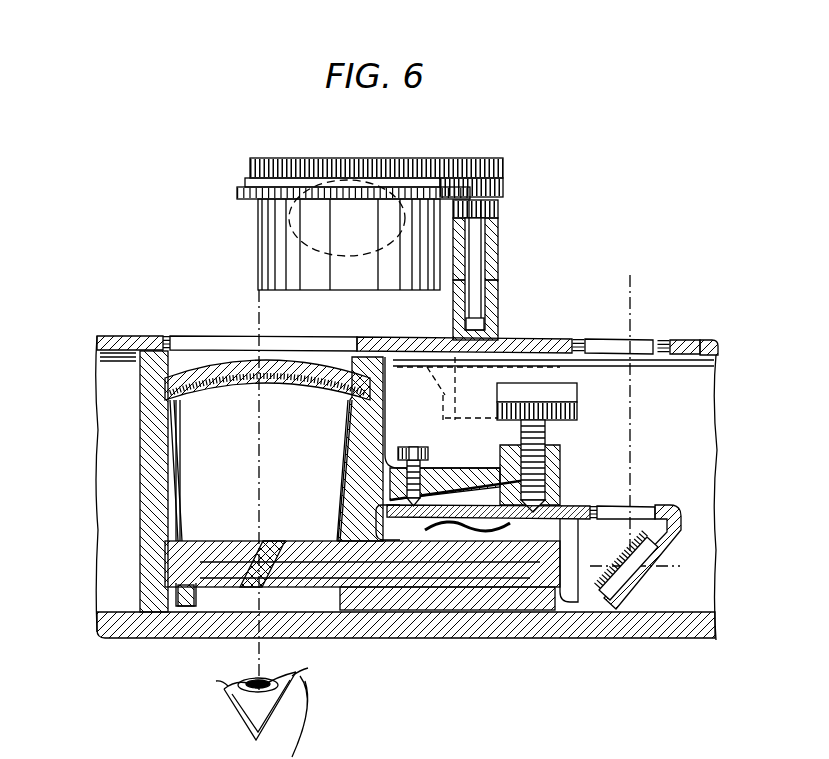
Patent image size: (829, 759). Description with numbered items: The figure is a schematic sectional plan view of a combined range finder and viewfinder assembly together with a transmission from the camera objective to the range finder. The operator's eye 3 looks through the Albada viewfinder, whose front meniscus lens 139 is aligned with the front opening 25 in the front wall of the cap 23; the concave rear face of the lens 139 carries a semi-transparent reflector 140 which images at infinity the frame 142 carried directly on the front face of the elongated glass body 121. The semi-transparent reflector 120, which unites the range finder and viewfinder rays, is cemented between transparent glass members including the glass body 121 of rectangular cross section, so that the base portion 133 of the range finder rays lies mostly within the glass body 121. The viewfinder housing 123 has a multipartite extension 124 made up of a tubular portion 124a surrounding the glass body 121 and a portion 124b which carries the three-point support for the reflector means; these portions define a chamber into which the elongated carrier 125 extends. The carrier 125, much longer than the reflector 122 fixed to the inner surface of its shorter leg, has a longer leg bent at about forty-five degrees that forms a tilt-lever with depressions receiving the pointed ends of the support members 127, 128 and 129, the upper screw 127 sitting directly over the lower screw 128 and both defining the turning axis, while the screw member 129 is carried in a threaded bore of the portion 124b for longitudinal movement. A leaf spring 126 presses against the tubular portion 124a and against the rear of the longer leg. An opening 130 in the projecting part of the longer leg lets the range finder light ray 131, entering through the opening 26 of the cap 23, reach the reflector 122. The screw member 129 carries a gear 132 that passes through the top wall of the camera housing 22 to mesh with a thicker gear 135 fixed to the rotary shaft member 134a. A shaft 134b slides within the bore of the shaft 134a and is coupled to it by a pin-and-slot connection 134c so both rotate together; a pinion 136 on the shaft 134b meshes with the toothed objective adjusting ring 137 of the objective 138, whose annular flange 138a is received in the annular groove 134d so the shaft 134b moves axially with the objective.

The eye 3 is at (245, 716).
The camera housing 22 is at (716, 420).
The cap 23 is at (716, 354).
The front opening 25 is at (205, 340).
The opening 26 is at (645, 342).
The semi-transparent reflector 120 is at (250, 545).
The elongated glass body 121 is at (330, 630).
The reflector 122 is at (646, 566).
The viewfinder housing 123 is at (150, 432).
The multipartite extension 124 is at (562, 519).
The tubular extension portion 124a is at (430, 612).
The extension portion 124b is at (475, 472).
The elongated carrier 125 is at (683, 524).
The spring means 126 is at (505, 530).
The threaded support member 127 is at (410, 446).
The support member 128 is at (428, 439).
The screw member 129 is at (546, 442).
The opening 130 is at (628, 507).
The range finder light ray 131 is at (638, 412).
The gear 132 is at (572, 412).
The base portion 133 is at (372, 600).
The rotary shaft member 134a is at (497, 322).
The shaft 134b is at (498, 232).
The pin-and-slot connection 134c is at (505, 263).
The annular groove 134d is at (500, 190).
The gear 135 is at (426, 341).
The pinion 136 is at (500, 176).
The objective adjusting ring 137 is at (250, 167).
The objective 138 is at (258, 247).
The annular flange 138a is at (238, 193).
The front meniscus lens 139 is at (336, 358).
The semi-transparent reflector 140 is at (290, 357).
The frame 142 is at (192, 540).